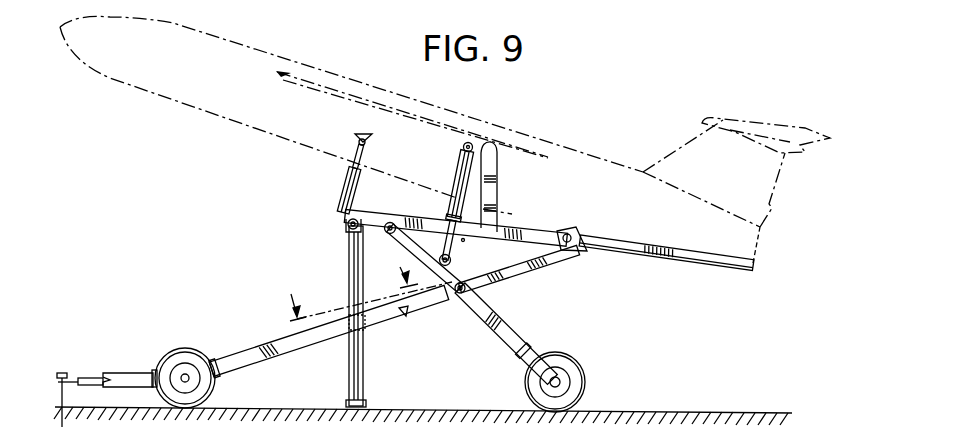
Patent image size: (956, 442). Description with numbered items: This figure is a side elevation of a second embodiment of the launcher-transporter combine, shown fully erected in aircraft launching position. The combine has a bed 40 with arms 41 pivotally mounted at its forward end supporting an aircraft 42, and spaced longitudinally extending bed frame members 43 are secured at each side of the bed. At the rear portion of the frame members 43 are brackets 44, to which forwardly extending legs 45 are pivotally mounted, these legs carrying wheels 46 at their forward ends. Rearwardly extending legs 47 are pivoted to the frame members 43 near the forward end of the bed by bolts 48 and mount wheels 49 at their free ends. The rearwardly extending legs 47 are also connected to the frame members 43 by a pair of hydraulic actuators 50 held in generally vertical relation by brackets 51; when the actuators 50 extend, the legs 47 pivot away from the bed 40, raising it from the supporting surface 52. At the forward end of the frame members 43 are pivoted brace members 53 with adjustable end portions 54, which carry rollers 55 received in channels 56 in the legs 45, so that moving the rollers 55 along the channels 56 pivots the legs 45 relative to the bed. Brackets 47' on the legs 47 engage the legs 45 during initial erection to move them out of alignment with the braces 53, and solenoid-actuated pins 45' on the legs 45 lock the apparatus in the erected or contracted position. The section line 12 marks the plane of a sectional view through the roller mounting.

The section line 12- 12 is at (363, 284).
The bed 40 is at (513, 232).
The arms 41 is at (345, 184).
The aircraft 42 is at (570, 152).
The bed frame members 43 is at (530, 268).
The brackets 44 is at (583, 237).
The forwardly extending legs 45 is at (518, 276).
The solenoid-actuated pins 45' is at (487, 296).
The wheels 46 is at (177, 350).
The rearwardly extending legs 47 is at (506, 333).
The brackets 47' is at (462, 260).
The bolts 48 is at (408, 198).
The wheels 49 is at (568, 357).
The hydraulic actuators 50 is at (463, 162).
The brackets 51 is at (495, 177).
The supporting surface 52 is at (668, 413).
The brace members 53 is at (348, 246).
The adjustable end portions 54 is at (366, 381).
The rollers 55 is at (368, 327).
The channels 56 is at (405, 313).